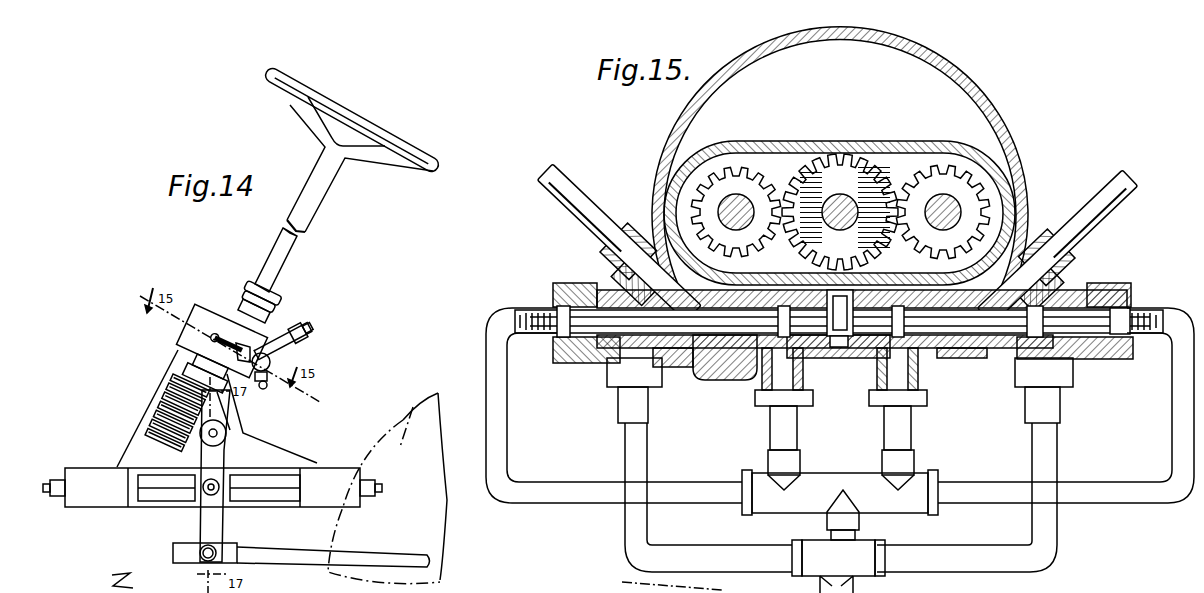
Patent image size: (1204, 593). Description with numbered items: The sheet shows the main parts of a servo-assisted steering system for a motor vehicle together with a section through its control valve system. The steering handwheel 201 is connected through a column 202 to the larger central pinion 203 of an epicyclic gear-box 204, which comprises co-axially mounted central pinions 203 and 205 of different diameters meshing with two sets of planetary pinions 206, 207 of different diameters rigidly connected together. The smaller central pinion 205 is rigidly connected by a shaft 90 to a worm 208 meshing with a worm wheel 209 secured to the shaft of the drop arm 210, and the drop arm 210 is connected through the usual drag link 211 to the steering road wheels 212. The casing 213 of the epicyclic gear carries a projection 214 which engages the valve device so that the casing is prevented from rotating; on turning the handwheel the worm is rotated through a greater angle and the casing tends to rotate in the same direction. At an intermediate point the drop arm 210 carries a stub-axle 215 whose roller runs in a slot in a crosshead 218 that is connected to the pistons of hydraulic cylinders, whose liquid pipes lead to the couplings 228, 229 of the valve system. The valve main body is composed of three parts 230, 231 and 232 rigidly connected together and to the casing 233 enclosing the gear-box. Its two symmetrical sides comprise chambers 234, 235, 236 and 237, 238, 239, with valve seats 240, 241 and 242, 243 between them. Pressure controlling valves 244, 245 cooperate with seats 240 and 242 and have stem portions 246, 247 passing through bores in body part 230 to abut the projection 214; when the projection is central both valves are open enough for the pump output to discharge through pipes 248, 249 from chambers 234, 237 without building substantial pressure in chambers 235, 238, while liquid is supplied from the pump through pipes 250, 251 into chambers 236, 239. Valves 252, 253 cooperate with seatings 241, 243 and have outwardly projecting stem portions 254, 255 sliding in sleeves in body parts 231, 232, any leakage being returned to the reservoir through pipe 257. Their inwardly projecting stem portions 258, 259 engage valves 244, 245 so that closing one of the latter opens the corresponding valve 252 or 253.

In FIG. 14, the shaft 90 is at (200, 370).
In FIG. 14, the steering handwheel 201 is at (396, 148).
In FIG. 14, the column 202 is at (285, 262).
In FIG. 15, the column 202 is at (840, 212).
In FIG. 15, the larger central pinion 203 is at (824, 160).
In FIG. 15, the epicyclic gear-box 204 is at (925, 141).
In FIG. 15, the smaller central pinion 205 is at (857, 150).
In FIG. 15, the planetary pinion 206 is at (762, 152).
In FIG. 15, the planetary pinion 207 is at (735, 165).
In FIG. 14, the worm 208 is at (172, 380).
In FIG. 14, the worm wheel 209 is at (250, 445).
In FIG. 14, the drop arm 210 is at (222, 532).
In FIG. 14, the drag link 211 is at (252, 565).
In FIG. 14, the steering road wheels 212 is at (387, 488).
In FIG. 15, the casing 213 is at (895, 140).
In FIG. 15, the projection 214 is at (845, 400).
In FIG. 14, the stub-axle 215 is at (225, 480).
In FIG. 14, the crosshead 218 is at (195, 495).
In FIG. 15, the coupling 228 is at (1045, 235).
In FIG. 14, the coupling 229 is at (271, 320).
In FIG. 15, the coupling 229 is at (632, 233).
In FIG. 15, the body part 230 is at (838, 347).
In FIG. 15, the body part 231 is at (1000, 360).
In FIG. 14, the body part 232 is at (300, 350).
In FIG. 15, the body part 232 is at (680, 353).
In FIG. 14, the casing 233 is at (203, 305).
In FIG. 15, the casing 233 is at (955, 78).
In FIG. 15, the chamber 234 is at (916, 442).
In FIG. 15, the chamber 235 is at (940, 355).
In FIG. 15, the chamber 236 is at (1065, 360).
In FIG. 15, the chamber 237 is at (888, 405).
In FIG. 15, the chamber 238 is at (742, 345).
In FIG. 15, the chamber 239 is at (632, 350).
In FIG. 15, the valve seat 240 is at (905, 400).
In FIG. 15, the valve seat 241 is at (1000, 350).
In FIG. 15, the valve seat 242 is at (772, 400).
In FIG. 15, the valve seat 243 is at (655, 345).
In FIG. 15, the pressure controlling valve 244 is at (908, 327).
In FIG. 15, the pressure controlling valve 245 is at (777, 317).
In FIG. 15, the stem portion 246 is at (867, 320).
In FIG. 15, the stem portion 247 is at (817, 317).
In FIG. 15, the pipe 248 is at (805, 470).
In FIG. 15, the pipe 249 is at (802, 455).
In FIG. 15, the pipe 250 is at (1057, 440).
In FIG. 15, the pipe 251 is at (625, 450).
In FIG. 15, the valve 252 is at (1080, 296).
In FIG. 15, the valve 253 is at (608, 300).
In FIG. 15, the outwardly projecting stem portion 254 is at (1125, 306).
In FIG. 15, the outwardly projecting stem portion 255 is at (546, 308).
In FIG. 14, the pipe 257 is at (268, 388).
In FIG. 15, the pipe 257 is at (498, 420).
In FIG. 15, the inwardly projecting stem portion 258 is at (948, 350).
In FIG. 15, the inwardly projecting stem portion 259 is at (697, 350).